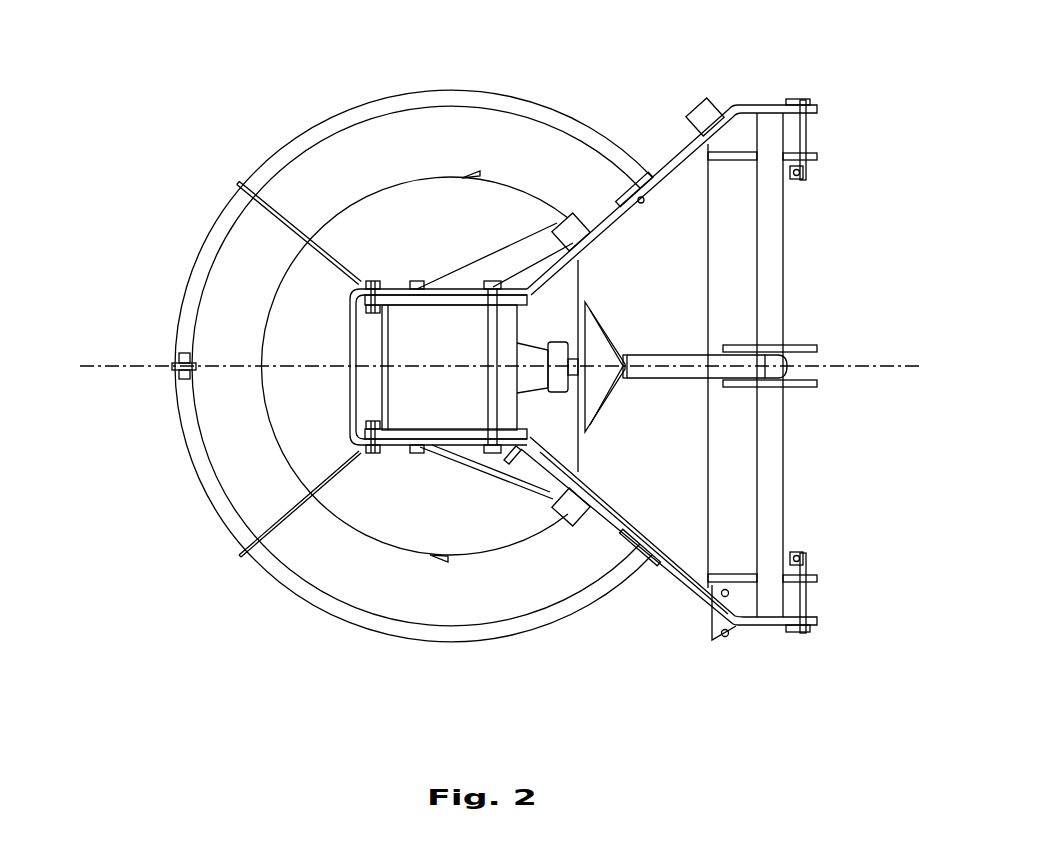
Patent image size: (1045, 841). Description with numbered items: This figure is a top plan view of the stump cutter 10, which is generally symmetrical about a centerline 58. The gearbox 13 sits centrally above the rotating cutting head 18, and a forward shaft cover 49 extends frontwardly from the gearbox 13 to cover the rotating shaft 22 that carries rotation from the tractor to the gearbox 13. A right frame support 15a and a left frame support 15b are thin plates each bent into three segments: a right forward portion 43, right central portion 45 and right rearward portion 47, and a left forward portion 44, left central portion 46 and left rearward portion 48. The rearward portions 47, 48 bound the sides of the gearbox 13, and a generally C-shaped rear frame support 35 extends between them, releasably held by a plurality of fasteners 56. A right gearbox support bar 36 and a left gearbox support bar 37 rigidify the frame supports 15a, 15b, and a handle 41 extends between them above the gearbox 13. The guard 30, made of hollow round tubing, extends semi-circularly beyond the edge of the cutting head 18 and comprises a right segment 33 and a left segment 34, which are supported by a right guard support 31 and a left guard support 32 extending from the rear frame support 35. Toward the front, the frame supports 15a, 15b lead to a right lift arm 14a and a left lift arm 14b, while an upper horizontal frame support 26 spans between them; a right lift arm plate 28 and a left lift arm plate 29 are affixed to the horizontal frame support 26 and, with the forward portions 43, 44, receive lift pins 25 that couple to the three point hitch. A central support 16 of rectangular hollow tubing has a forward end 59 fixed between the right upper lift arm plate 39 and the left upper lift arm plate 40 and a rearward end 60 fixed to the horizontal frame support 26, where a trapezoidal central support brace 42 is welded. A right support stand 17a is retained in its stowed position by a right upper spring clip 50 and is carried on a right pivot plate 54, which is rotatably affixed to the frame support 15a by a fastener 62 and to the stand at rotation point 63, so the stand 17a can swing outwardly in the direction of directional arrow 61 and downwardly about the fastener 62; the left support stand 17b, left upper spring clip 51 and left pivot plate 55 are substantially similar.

The stump cutter 10 is at (646, 50).
The gearbox 13 is at (421, 363).
The right lift arm 14a is at (773, 462).
The left lift arm 14b is at (778, 256).
The right frame support 15a is at (746, 628).
The left frame support 15b is at (694, 155).
The central support 16 is at (687, 375).
The right support stand 17a is at (680, 598).
The left support stand 17b is at (710, 108).
The cutting head 18 is at (402, 220).
The rotating shaft 22 is at (574, 392).
The lift pin 25 is at (806, 137).
The upper horizontal frame support 26 is at (646, 283).
The right lift arm plate 28 is at (813, 570).
The left lift arm plate 29 is at (810, 160).
The guard 30 is at (367, 366).
The right guard support 31 is at (298, 508).
The left guard support 32 is at (278, 203).
The right segment 33 is at (410, 641).
The left segment 34 is at (420, 93).
The rear frame support 35 is at (353, 356).
The right gearbox support bar 36 is at (498, 471).
The left gearbox support bar 37 is at (506, 266).
The right upper lift arm plate 39 is at (800, 388).
The left upper lift arm plate 40 is at (800, 345).
The handle 41 is at (493, 386).
The central support brace 42 is at (584, 363).
The right forward portion 43 is at (773, 625).
The left forward portion 44 is at (773, 104).
The right central portion 45 is at (608, 503).
The left central portion 46 is at (673, 162).
The right rearward portion 47 is at (431, 441).
The left rearward portion 48 is at (398, 292).
The forward shaft cover 49 is at (523, 352).
The right upper spring clip 50 is at (558, 513).
The left upper spring clip 51 is at (566, 213).
The right pivot plate 54 is at (714, 630).
The left pivot plate 55 is at (712, 103).
The fasteners 56 is at (375, 278).
The centerline 58 is at (130, 364).
The forward end 59 is at (757, 372).
The rearward end 60 is at (626, 356).
The directional arrow 61 is at (578, 636).
The fastener 62 is at (724, 590).
The rotation point 63 is at (724, 641).